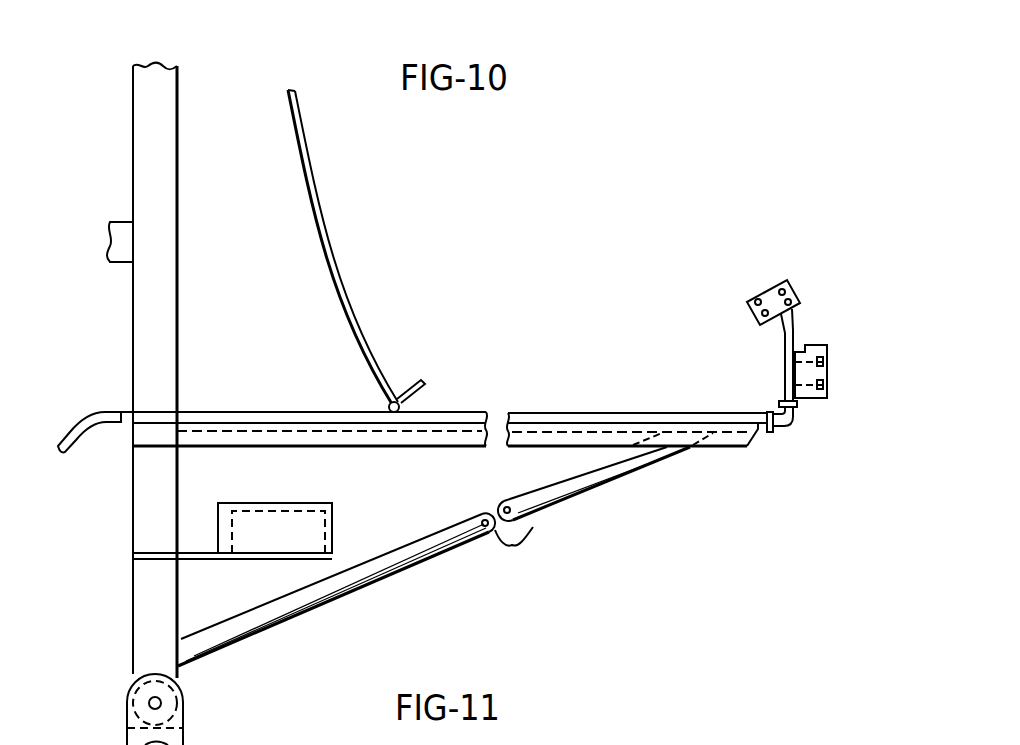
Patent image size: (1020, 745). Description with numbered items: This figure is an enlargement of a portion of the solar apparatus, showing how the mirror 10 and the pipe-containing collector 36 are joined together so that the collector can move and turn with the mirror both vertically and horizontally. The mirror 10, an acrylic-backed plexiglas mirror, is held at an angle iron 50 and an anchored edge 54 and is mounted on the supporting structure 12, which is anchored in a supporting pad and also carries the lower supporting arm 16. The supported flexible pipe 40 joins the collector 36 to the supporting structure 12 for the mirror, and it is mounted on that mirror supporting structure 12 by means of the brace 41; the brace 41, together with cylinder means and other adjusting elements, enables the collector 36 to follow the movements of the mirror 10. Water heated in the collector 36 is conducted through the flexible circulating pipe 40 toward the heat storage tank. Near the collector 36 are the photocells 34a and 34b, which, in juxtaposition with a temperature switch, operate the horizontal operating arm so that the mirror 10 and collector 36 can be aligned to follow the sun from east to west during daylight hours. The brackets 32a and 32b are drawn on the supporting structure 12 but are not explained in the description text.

In FIG. 10, the mirror 10 is at (309, 213).
In FIG. 11, the mirror 10 is at (742, 740).
In FIG. 10, the supporting structure 12 is at (166, 171).
In FIG. 10, the lower supporting arm 16 is at (184, 731).
In FIG. 10, the bracket 32a is at (333, 520).
In FIG. 10, the bracket plate 32b is at (333, 522).
In FIG. 10, the photocell 34a is at (805, 344).
In FIG. 10, the photocell 34b is at (814, 399).
In FIG. 10, the pipe-containing collector 36 is at (755, 300).
In FIG. 10, the supported flexible pipe 40 is at (84, 410).
In FIG. 10, the brace 41 is at (397, 579).
In FIG. 10, the angle iron 50 is at (388, 404).
In FIG. 10, the anchored edge 54 is at (432, 395).